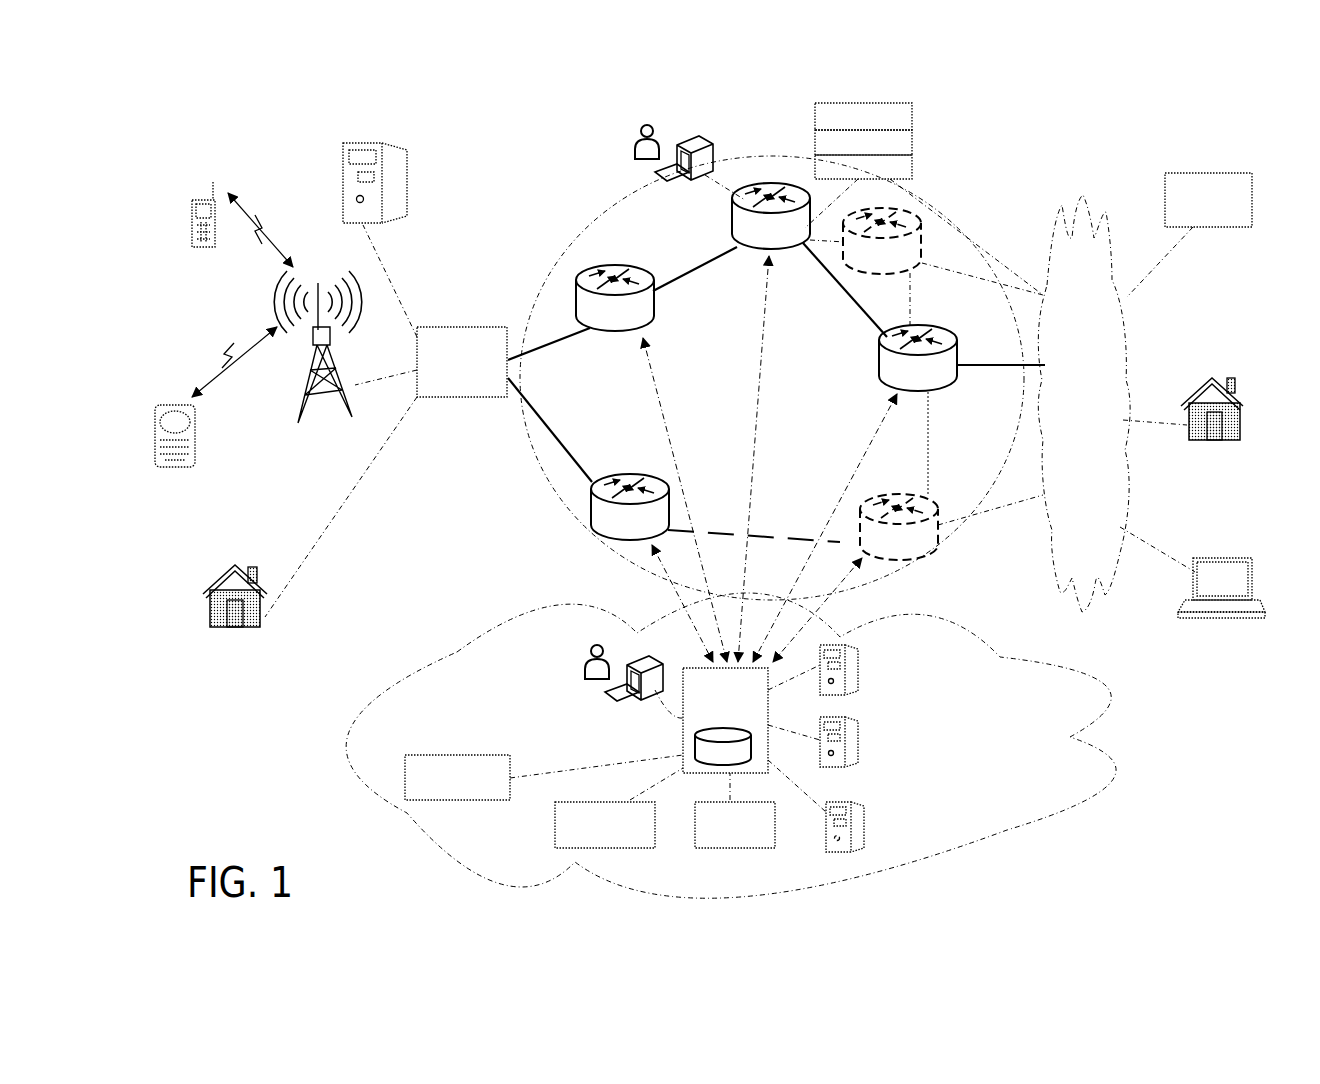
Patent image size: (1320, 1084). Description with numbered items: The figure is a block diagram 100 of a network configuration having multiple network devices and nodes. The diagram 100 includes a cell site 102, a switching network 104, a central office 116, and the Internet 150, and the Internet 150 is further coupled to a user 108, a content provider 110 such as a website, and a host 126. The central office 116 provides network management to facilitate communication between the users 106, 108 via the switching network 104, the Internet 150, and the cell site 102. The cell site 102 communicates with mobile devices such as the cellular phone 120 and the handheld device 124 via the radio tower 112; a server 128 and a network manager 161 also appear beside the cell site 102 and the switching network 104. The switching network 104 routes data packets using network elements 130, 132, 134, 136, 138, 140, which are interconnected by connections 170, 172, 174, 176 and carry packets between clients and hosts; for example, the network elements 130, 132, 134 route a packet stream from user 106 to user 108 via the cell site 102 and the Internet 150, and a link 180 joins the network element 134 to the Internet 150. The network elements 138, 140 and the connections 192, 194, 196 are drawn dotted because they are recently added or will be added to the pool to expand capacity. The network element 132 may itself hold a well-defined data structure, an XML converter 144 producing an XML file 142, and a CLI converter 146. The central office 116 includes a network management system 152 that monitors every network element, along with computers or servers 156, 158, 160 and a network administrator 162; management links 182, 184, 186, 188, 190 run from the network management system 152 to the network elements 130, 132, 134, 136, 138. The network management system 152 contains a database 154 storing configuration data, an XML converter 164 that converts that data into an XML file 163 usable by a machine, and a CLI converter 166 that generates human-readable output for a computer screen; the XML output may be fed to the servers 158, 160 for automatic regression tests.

The block diagram 100 is at (1103, 133).
The cell site 102 is at (490, 323).
The switching network 104 is at (552, 280).
The user 106 is at (225, 630).
The user 108 is at (1202, 442).
The content provider 110 is at (1189, 235).
The radio tower 112 is at (332, 430).
The central office 116 is at (418, 648).
The cellular phone 120 is at (202, 195).
The handheld device 124 is at (235, 450).
The host 126 is at (1192, 572).
The server 128 is at (410, 200).
The network element 130 is at (615, 298).
The network element 132 is at (771, 216).
The network element 134 is at (918, 358).
The network element 136 is at (630, 507).
The network element 138 is at (951, 527).
The network element 140 is at (926, 251).
The XML file 142 is at (912, 120).
The XML converter 144 is at (813, 142).
The CLI converter 146 is at (912, 167).
The Internet 150 is at (1084, 403).
The network management system 152 is at (668, 738).
The database 154 is at (690, 755).
The computer or server 156 is at (877, 660).
The computer or server 158 is at (877, 730).
The computer or server 160 is at (866, 835).
The network manager 161 is at (617, 132).
The network administrator 162 is at (593, 645).
The XML file 163 is at (458, 755).
The XML converter 164 is at (605, 802).
The CLI converter 166 is at (735, 850).
The connection 170 is at (545, 340).
The connection 172 is at (705, 262).
The connection 174 is at (830, 280).
The connection 176 is at (548, 420).
The link 180 is at (942, 372).
The management connection 182 is at (670, 575).
The management connection 184 is at (665, 368).
The management connection 186 is at (760, 400).
The management connection 188 is at (856, 466).
The management connection 190 is at (828, 598).
The connection 192 is at (742, 525).
The connection 194 is at (930, 425).
The connection 196 is at (912, 290).